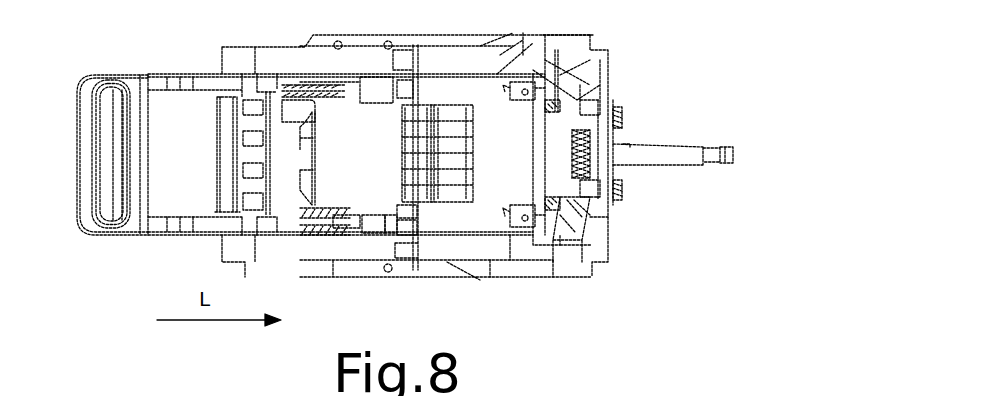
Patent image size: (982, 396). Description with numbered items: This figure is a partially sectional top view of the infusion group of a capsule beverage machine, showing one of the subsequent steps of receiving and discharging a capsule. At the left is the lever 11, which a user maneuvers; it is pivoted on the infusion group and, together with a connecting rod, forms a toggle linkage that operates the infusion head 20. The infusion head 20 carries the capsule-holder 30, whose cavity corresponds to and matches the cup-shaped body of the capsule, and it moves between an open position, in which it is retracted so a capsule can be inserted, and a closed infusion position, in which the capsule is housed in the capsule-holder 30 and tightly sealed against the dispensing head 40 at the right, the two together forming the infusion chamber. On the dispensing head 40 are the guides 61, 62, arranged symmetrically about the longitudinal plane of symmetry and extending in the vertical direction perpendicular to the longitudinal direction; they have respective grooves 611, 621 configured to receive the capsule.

The lever 11 is at (143, 80).
The infusion head 20 is at (353, 164).
The capsule-holder 30 is at (447, 130).
The dispensing head 40 is at (590, 95).
The guide 61 is at (558, 112).
The groove 611 is at (556, 110).
The guide 62 is at (560, 200).
The groove 621 is at (556, 197).